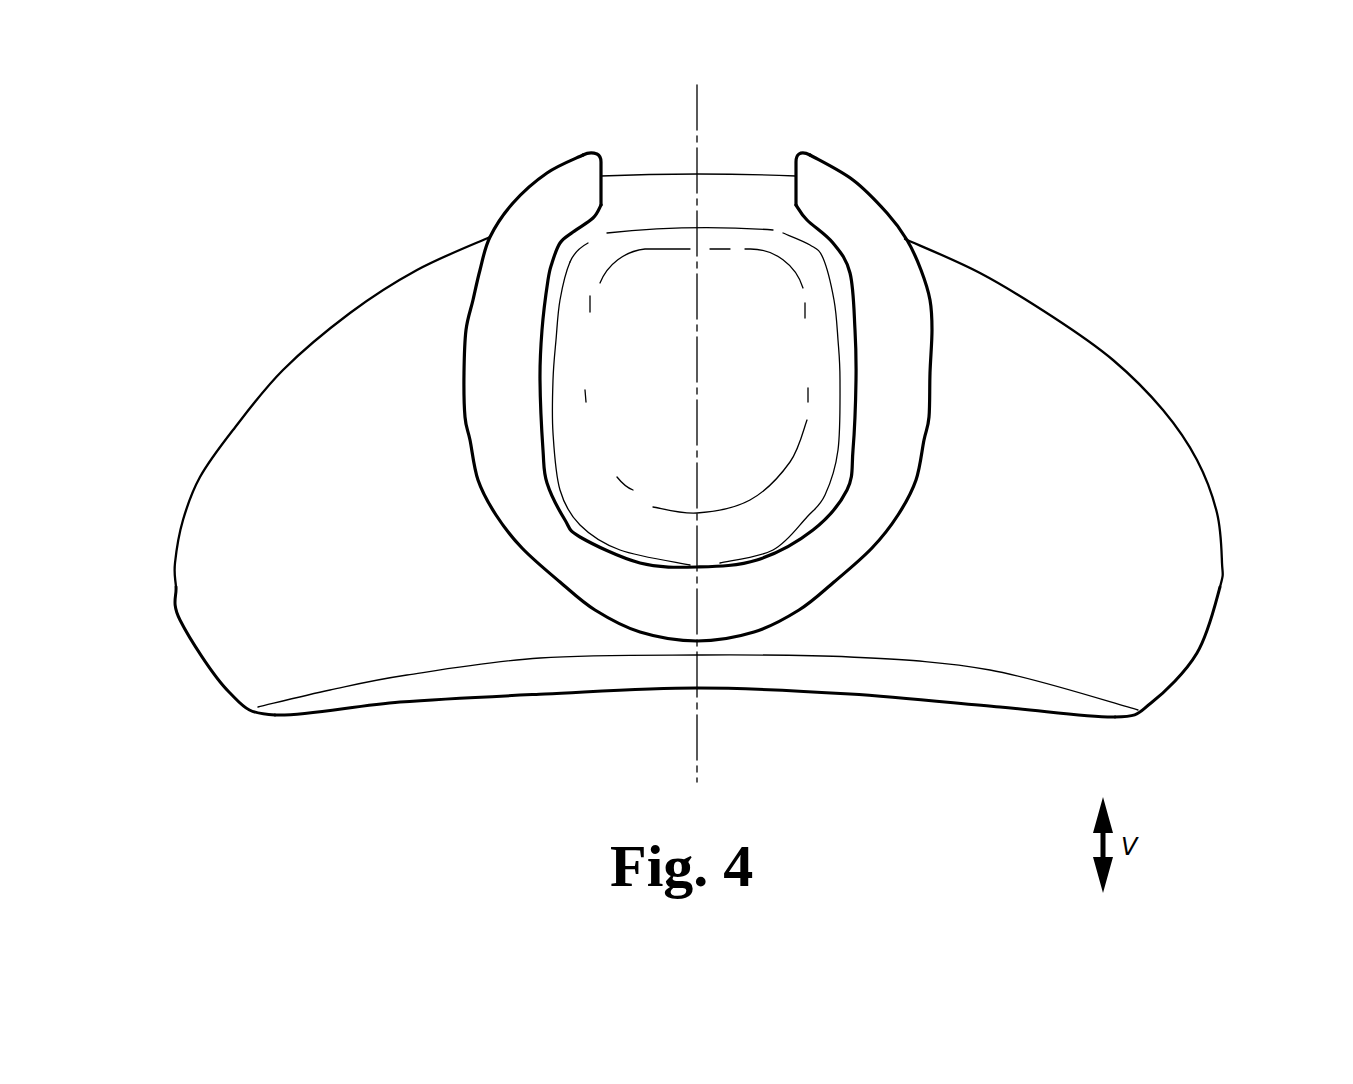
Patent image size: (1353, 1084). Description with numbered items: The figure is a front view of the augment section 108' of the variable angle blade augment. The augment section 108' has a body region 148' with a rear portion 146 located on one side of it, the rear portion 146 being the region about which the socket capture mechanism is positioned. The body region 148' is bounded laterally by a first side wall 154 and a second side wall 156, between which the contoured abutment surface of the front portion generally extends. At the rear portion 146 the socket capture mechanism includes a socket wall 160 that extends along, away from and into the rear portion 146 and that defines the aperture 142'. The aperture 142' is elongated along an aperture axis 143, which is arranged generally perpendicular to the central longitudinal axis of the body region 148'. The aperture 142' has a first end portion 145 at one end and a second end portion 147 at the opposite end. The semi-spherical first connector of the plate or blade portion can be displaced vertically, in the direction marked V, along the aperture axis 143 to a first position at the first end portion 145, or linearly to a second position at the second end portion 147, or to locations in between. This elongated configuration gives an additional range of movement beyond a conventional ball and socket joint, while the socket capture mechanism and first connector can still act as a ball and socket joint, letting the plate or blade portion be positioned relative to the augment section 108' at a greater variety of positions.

The augment section 108' is at (651, 477).
The aperture 142' is at (754, 327).
The aperture axis 143 is at (697, 120).
The first end portion 145 is at (753, 243).
The rear portion 146 is at (966, 303).
The second end portion 147 is at (663, 548).
The body region 148' is at (1067, 413).
The first side wall 154 is at (1222, 594).
The second side wall 156 is at (176, 578).
The socket wall 160 is at (900, 234).